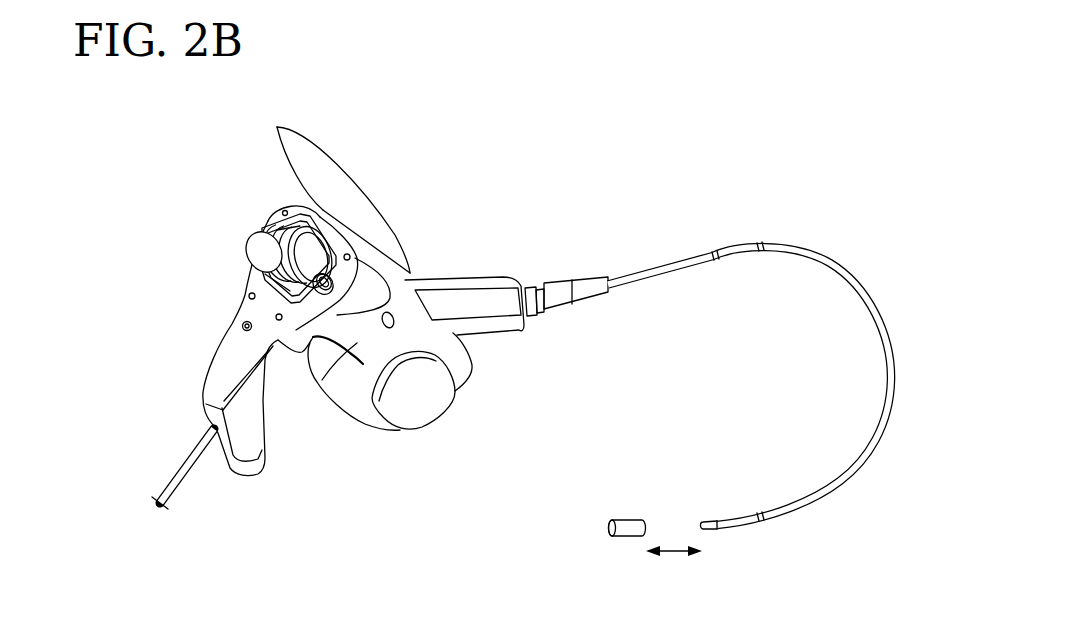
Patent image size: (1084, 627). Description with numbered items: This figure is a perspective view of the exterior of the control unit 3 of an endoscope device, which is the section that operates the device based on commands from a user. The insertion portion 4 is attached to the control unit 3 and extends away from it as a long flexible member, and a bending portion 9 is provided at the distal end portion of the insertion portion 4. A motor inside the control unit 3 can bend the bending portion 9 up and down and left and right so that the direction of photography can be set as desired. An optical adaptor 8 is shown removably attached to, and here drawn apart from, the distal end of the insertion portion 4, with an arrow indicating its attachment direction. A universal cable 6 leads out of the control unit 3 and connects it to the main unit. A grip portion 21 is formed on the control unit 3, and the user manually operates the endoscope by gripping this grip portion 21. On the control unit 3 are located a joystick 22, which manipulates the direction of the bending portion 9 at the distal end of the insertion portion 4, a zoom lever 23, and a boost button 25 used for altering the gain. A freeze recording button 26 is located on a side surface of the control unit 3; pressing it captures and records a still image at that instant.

The control unit 3 is at (472, 381).
The insertion portion 4 is at (890, 328).
The universal cable 6 is at (194, 484).
The optical adaptor 8 is at (631, 522).
The bending portion 9 is at (712, 518).
The grip portion 21 is at (252, 428).
The joystick 22 is at (255, 246).
The zoom lever 23 is at (330, 283).
The boost button 25 is at (242, 324).
The freeze recording button 26 is at (392, 316).